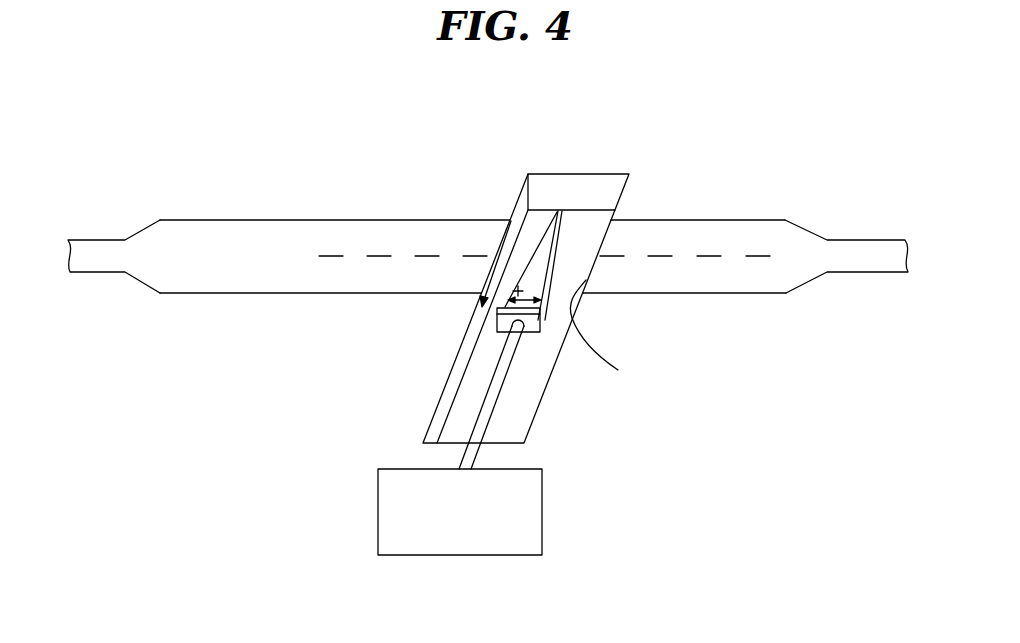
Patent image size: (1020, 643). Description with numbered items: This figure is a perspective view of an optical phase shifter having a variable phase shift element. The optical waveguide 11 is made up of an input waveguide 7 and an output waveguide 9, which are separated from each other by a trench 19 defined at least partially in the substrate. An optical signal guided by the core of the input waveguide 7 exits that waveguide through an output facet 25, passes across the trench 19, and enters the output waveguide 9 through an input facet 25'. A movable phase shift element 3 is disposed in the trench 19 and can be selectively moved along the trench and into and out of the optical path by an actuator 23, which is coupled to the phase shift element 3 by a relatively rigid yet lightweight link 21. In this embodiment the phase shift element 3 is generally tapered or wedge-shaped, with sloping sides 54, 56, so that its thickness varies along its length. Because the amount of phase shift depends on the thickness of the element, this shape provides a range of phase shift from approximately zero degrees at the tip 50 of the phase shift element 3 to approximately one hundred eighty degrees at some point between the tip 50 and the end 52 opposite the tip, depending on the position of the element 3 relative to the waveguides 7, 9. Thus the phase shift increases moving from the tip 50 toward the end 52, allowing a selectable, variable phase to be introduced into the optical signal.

The phase shift element 3 is at (537, 332).
The input waveguide 7 is at (215, 218).
The output waveguide 9 is at (762, 217).
The optical waveguide 11 is at (283, 318).
The trench 19 is at (512, 418).
The link 21 is at (460, 463).
The actuator 23 is at (542, 555).
The output facet 25 is at (427, 327).
The input facet 25' is at (612, 331).
The tip 50 is at (497, 310).
The end 52 is at (498, 332).
The side 54 is at (553, 248).
The side 56 is at (550, 230).